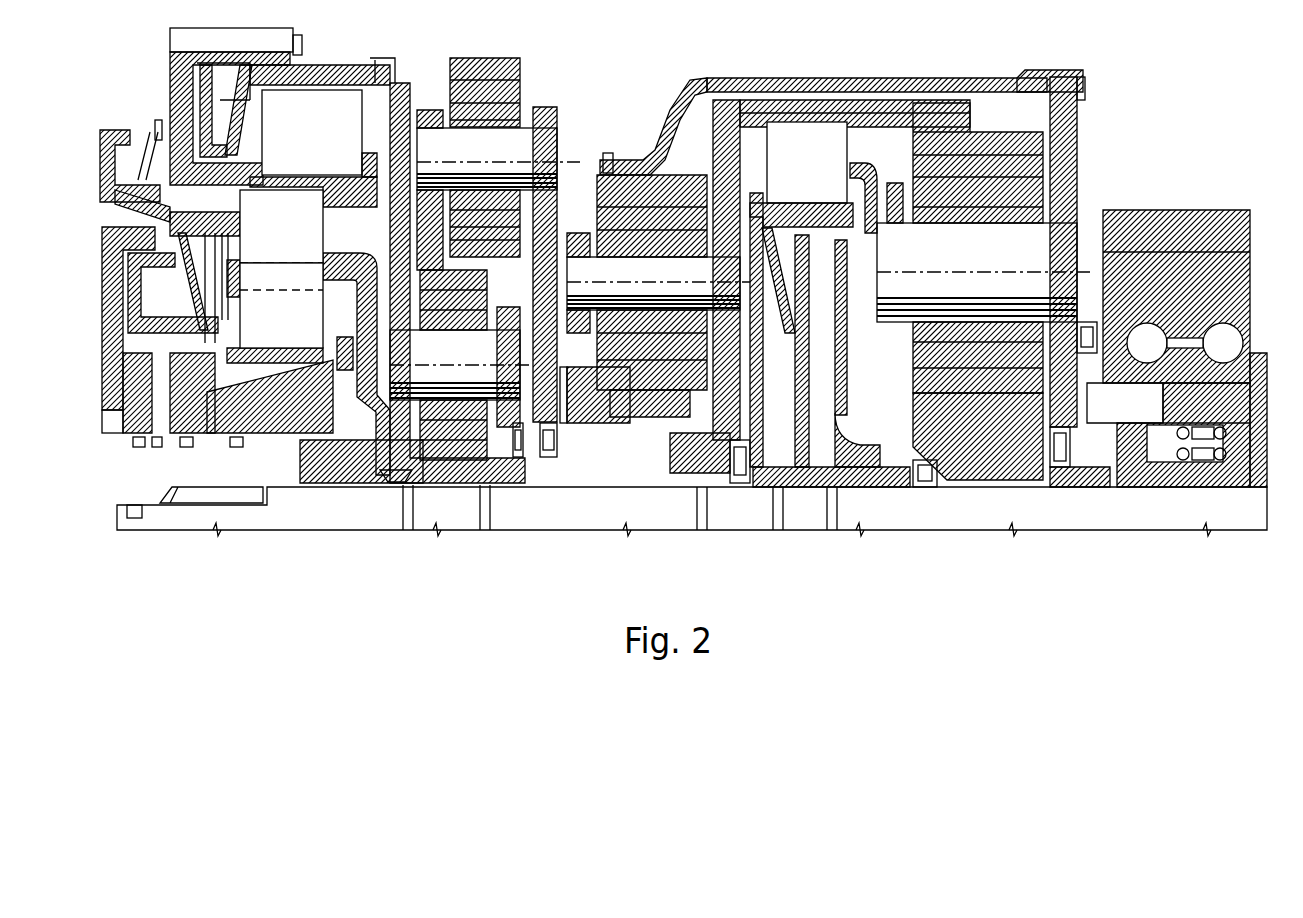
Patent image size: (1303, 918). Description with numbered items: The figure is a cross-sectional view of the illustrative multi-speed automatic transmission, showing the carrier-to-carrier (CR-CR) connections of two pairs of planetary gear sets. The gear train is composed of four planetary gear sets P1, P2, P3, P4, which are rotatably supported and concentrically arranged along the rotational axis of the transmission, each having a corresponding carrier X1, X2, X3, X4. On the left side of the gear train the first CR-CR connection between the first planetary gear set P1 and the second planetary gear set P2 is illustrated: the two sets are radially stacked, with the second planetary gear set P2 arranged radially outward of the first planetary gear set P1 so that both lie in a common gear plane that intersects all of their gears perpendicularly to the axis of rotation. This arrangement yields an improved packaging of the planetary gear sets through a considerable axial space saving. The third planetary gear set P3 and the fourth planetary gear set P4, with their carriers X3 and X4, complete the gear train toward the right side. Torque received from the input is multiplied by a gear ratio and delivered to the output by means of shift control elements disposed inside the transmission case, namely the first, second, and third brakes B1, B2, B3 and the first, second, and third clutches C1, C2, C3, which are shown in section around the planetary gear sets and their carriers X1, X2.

The carrier X1 is at (366, 82).
The carrier X2 is at (563, 183).
The carrier X3 is at (1085, 142).
The carrier X4 is at (710, 127).
The first planetary gear set P1 is at (457, 440).
The second planetary gear set P2 is at (485, 95).
The third planetary gear set P3 is at (995, 175).
The fourth planetary gear set P4 is at (640, 205).
The first brake B1 is at (281, 226).
The second brake B2 is at (320, 136).
The third brake B3 is at (1062, 490).
The first clutch C1 is at (281, 305).
The second clutch C2 is at (393, 483).
The third clutch C3 is at (801, 174).